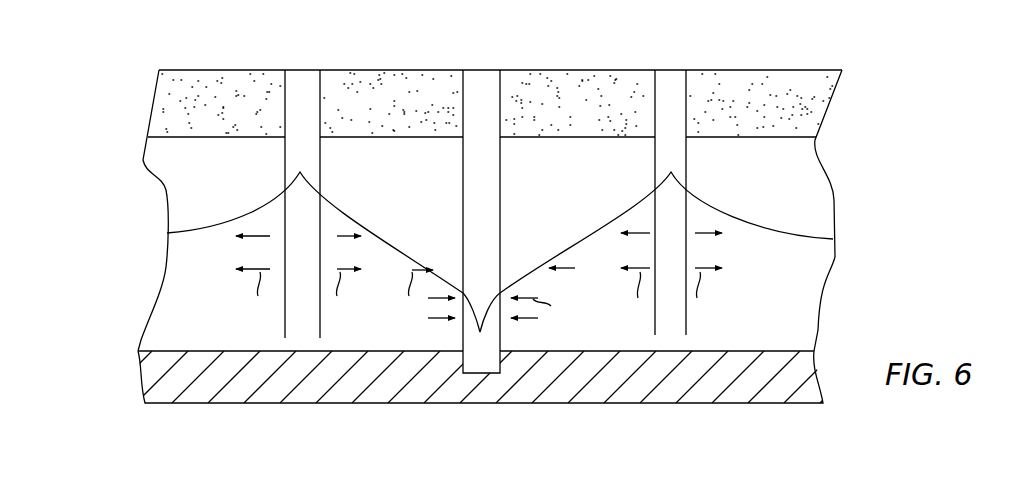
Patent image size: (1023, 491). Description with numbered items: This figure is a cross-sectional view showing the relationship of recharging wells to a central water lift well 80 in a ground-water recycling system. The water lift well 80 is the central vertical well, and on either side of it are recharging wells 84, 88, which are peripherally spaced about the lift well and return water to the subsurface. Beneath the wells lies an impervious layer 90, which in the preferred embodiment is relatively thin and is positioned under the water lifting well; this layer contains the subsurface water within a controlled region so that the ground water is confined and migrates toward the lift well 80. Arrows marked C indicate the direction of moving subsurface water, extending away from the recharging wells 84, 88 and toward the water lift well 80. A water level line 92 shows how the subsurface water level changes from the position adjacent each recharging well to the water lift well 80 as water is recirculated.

The water lift well 80 is at (490, 68).
The recharging well 84 is at (673, 68).
The recharging well 88 is at (302, 68).
The impervious layer 90 is at (826, 224).
The water level line 92 is at (500, 252).